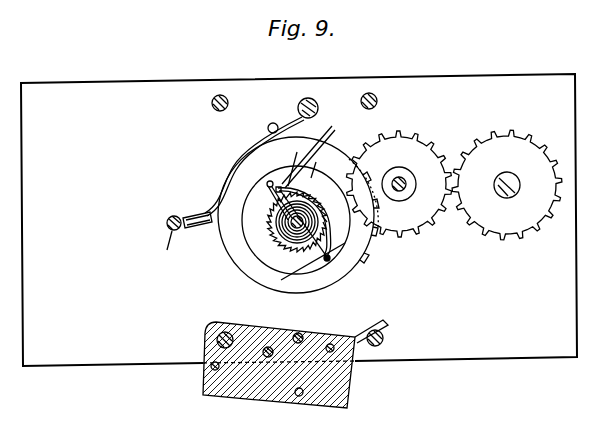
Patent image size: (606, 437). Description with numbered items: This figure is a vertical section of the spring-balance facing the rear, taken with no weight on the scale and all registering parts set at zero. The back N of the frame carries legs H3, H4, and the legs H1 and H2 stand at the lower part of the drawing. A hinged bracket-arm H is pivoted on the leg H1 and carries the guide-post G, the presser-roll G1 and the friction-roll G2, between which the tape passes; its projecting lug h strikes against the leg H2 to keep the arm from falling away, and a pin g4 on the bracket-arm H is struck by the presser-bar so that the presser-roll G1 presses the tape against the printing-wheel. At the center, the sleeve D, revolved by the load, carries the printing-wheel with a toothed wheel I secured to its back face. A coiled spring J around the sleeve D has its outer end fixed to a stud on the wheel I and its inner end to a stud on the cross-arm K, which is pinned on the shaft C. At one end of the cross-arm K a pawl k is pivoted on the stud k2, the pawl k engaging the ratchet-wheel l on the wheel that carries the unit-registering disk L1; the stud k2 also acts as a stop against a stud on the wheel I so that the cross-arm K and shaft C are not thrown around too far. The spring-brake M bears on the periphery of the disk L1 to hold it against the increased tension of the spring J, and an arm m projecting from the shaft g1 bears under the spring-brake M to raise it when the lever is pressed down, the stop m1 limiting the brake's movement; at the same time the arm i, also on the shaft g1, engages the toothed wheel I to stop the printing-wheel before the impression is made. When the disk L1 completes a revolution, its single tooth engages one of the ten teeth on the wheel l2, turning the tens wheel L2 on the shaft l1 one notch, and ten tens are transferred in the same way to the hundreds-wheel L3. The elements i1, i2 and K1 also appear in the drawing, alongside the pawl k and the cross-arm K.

The back N is at (90, 366).
The leg H3 is at (207, 104).
The leg H4 is at (377, 101).
The spring-brake M is at (227, 173).
The stop m1 is at (270, 124).
The arm m is at (190, 214).
The shaft g1 is at (164, 250).
The unit-registering disk L1 is at (222, 236).
The shaft C is at (326, 190).
The sleeve D is at (273, 232).
The coiled spring J is at (297, 229).
The ratchet-wheel l is at (291, 234).
The link i2 is at (266, 238).
The stud k2 is at (270, 181).
The pawl k is at (310, 153).
The lever i1 is at (292, 162).
The arm i is at (314, 163).
The curved pawl K1 is at (340, 240).
The toothed wheel I is at (305, 239).
The cross-arm K is at (305, 268).
The wheel L2 is at (450, 172).
The wheel l2 is at (408, 186).
The shaft l1 is at (398, 192).
The hundreds-wheel L3 is at (507, 185).
The bracket-arm H is at (246, 390).
The leg H1 is at (217, 342).
The pin g4 is at (212, 368).
The guide-post G is at (269, 348).
The presser-roll G1 is at (301, 335).
The friction-roll G2 is at (333, 345).
The projecting lug h is at (371, 323).
The leg H2 is at (387, 336).